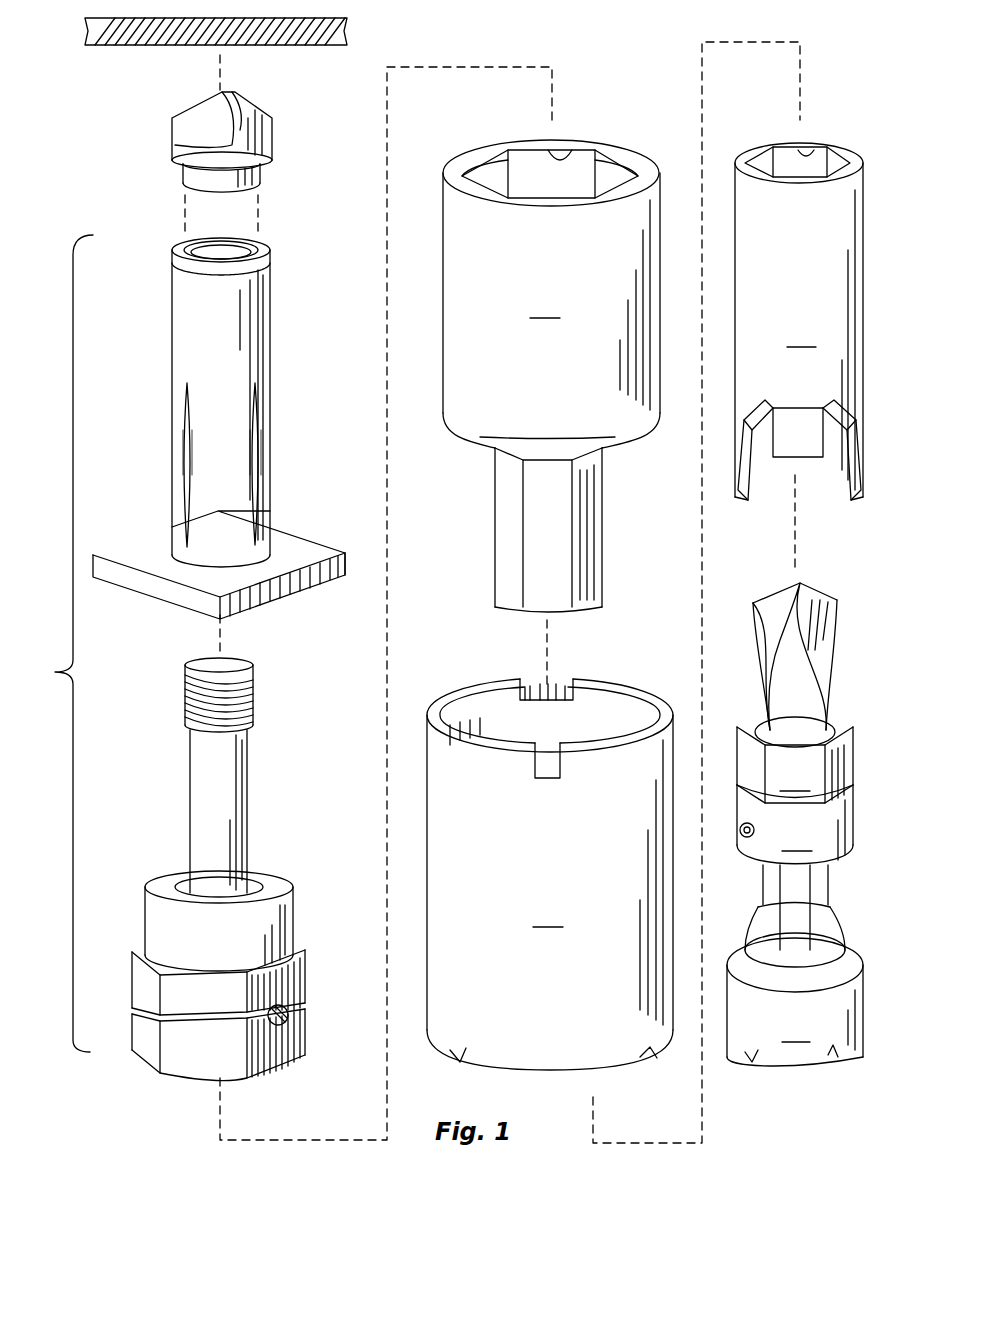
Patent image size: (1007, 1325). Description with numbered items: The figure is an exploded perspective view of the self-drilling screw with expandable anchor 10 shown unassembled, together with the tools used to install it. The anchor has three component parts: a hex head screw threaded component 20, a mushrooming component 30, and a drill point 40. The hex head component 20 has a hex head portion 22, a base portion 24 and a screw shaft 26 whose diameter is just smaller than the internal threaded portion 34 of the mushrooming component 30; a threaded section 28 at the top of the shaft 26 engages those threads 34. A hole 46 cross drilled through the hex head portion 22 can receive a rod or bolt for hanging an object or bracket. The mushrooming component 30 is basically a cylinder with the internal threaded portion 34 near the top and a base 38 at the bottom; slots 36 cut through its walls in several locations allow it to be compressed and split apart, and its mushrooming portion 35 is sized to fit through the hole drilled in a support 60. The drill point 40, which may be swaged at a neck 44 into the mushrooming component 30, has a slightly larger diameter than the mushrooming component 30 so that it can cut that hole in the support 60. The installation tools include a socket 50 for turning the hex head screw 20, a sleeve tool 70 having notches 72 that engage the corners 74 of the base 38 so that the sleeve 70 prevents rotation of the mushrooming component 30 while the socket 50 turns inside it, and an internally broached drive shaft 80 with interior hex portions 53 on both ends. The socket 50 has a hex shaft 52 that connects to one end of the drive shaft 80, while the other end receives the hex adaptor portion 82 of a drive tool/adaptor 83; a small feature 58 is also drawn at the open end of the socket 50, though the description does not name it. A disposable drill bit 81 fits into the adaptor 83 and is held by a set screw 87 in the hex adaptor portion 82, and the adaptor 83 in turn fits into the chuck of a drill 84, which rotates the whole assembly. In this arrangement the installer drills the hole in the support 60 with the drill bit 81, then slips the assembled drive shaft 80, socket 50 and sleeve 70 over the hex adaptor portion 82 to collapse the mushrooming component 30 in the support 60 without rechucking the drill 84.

The self-drilling screw with expandable anchor 10 is at (55, 643).
The hex head screw threaded component 20 is at (115, 1095).
The hex head portion 22 is at (305, 1045).
The base portion 24 is at (165, 870).
The screw shaft 26 is at (173, 775).
The threaded section 28 is at (185, 700).
The mushrooming component 30 is at (227, 467).
The internal threaded portion 34 is at (207, 255).
The mushrooming portion 35 is at (224, 468).
The slots 36 is at (178, 438).
The base 38 is at (150, 600).
The drill point 40 is at (172, 135).
The neck 44 is at (185, 178).
The hole 46 is at (282, 1008).
The socket 50 is at (550, 350).
The hex shaft 52 is at (492, 520).
The interior hex portions 53 is at (808, 150).
The notch 58 is at (570, 150).
The support 60 is at (113, 47).
The sleeve tool 70 is at (549, 861).
The notches 72 is at (520, 725).
The corners 74 is at (348, 578).
The internally broached drive shaft 80 is at (800, 305).
The drill bit 81 is at (815, 600).
The hex adaptor portion 82 is at (795, 760).
The drive tool/adaptor 83 is at (795, 824).
The drill 84 is at (795, 965).
The set screw 87 is at (740, 832).